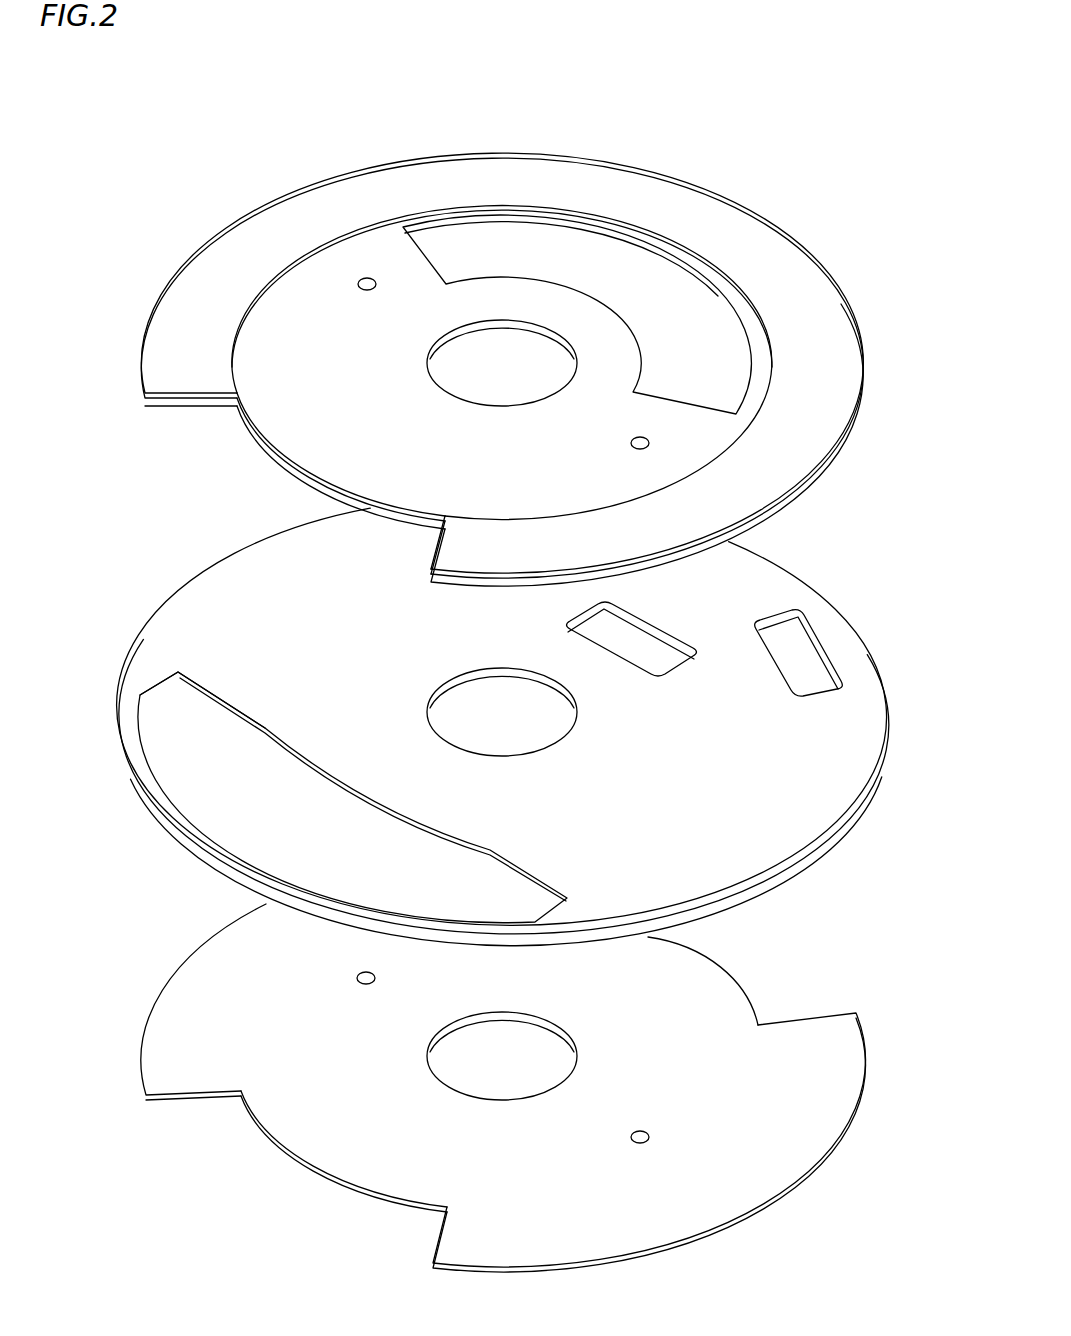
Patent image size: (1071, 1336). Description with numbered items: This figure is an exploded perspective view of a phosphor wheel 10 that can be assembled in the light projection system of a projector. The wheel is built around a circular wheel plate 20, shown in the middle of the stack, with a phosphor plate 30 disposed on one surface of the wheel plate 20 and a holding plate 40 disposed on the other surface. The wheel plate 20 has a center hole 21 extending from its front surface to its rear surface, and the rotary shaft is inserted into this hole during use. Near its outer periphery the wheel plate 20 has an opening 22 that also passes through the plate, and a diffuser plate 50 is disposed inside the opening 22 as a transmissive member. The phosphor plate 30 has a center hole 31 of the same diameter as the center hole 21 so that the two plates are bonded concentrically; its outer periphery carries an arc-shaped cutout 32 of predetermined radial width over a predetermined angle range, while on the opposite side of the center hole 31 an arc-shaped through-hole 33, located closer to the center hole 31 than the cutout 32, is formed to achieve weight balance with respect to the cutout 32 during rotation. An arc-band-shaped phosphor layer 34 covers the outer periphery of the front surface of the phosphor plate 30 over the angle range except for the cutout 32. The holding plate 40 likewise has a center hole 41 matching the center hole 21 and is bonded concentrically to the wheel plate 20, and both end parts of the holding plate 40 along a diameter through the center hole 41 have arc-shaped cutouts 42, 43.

The phosphor wheel 10 is at (846, 162).
The wheel plate 20 is at (850, 615).
The center hole 21 is at (537, 680).
The opening 22 is at (258, 866).
The phosphor plate 30 is at (864, 338).
The center hole 31 is at (535, 332).
The arc-shaped cutout 32 is at (268, 446).
The arc-shaped through-hole 33 is at (519, 236).
The phosphor layer 34 is at (238, 252).
The holding plate 40 is at (832, 1152).
The center hole 41 is at (538, 1022).
The arc-shaped cutout 42 is at (340, 1186).
The arc-shaped cutout 43 is at (735, 976).
The diffuser plate 50 is at (165, 692).